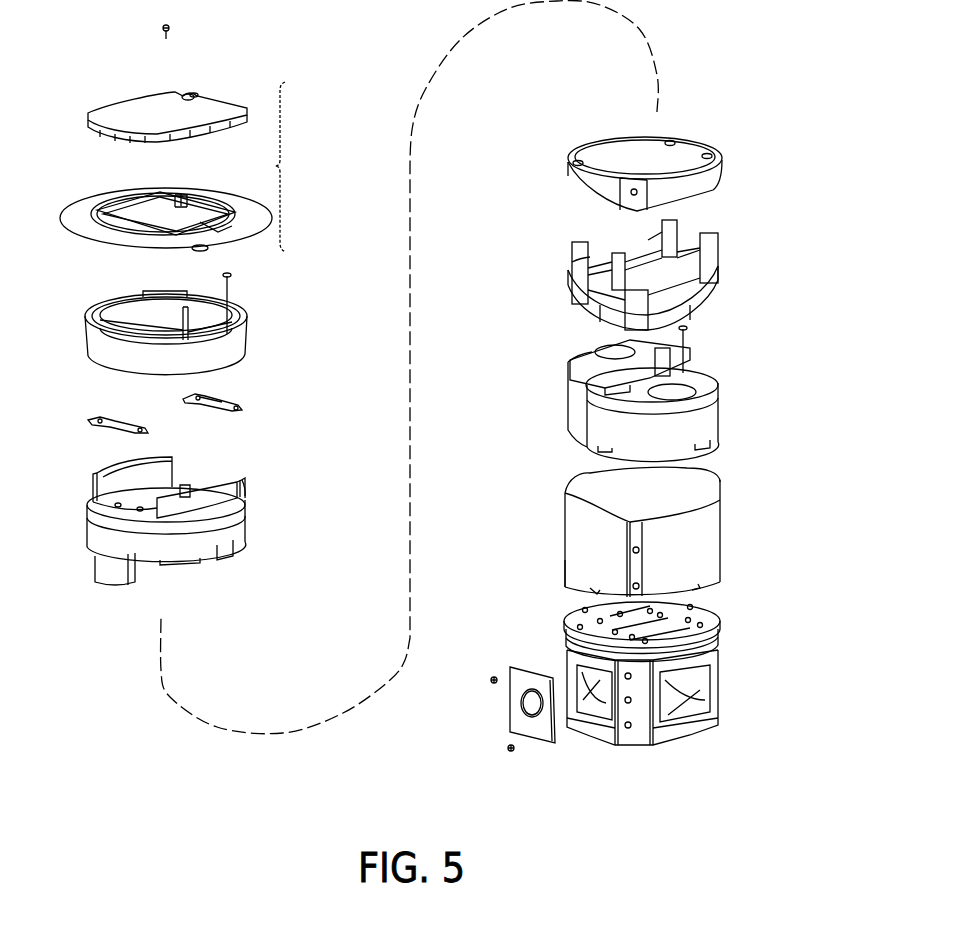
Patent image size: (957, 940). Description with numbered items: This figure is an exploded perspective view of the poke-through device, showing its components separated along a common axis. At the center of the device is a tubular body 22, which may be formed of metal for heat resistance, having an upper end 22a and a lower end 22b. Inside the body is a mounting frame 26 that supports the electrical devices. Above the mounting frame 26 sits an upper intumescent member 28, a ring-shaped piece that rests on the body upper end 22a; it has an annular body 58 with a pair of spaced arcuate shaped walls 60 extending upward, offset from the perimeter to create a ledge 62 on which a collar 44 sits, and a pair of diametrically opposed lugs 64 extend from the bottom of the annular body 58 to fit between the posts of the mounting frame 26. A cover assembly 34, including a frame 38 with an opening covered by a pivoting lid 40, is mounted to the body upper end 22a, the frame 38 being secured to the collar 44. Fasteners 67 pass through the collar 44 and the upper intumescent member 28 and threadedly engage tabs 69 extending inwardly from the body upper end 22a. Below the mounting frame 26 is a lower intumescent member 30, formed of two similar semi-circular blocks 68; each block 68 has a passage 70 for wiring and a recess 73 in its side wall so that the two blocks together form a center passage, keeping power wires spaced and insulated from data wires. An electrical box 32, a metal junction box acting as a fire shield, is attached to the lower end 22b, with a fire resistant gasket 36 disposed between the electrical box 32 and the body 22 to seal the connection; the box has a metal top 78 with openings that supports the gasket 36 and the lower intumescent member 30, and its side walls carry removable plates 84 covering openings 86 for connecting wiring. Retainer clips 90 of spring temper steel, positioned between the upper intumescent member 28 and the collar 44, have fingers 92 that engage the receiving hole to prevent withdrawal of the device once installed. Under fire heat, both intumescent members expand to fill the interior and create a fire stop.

The tubular body 22 is at (571, 522).
The upper end 22a is at (573, 177).
The lower end 22b is at (568, 580).
The mounting frame 26 is at (716, 295).
The upper intumescent member 28 is at (172, 528).
The lower intumescent member 30 is at (656, 390).
The electrical box 32 is at (611, 718).
The cover assembly 34 is at (300, 167).
The fire resistant gasket 36 is at (710, 622).
The frame 38 is at (80, 210).
The lid 40 is at (128, 113).
The collar 44 is at (244, 349).
The annular body 58 is at (193, 547).
The arcuate shaped walls 60 is at (92, 480).
The ledge 62 is at (102, 505).
The lugs 64 is at (94, 567).
The fasteners 67 is at (232, 285).
The semi-circular blocks 68 is at (592, 408).
The tabs 69 is at (700, 149).
The passage 70 is at (590, 347).
The recess 73 is at (600, 374).
The metal top 78 is at (716, 650).
The removable plates 84 is at (509, 706).
The openings 86 is at (578, 670).
The retainer clip 90 is at (157, 432).
The fingers 92 is at (232, 398).